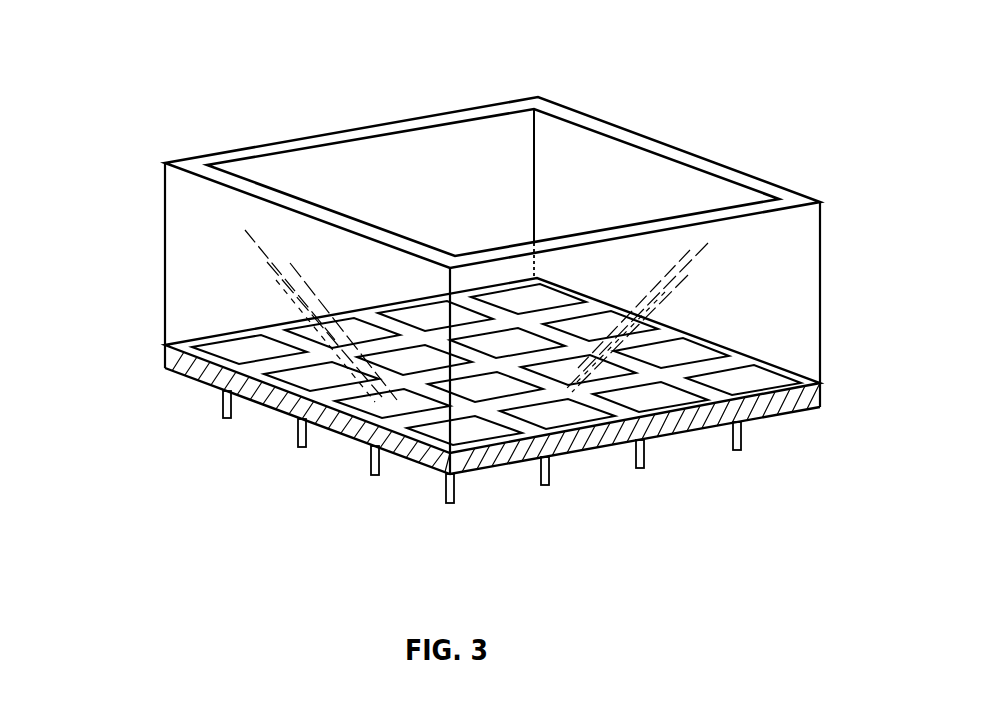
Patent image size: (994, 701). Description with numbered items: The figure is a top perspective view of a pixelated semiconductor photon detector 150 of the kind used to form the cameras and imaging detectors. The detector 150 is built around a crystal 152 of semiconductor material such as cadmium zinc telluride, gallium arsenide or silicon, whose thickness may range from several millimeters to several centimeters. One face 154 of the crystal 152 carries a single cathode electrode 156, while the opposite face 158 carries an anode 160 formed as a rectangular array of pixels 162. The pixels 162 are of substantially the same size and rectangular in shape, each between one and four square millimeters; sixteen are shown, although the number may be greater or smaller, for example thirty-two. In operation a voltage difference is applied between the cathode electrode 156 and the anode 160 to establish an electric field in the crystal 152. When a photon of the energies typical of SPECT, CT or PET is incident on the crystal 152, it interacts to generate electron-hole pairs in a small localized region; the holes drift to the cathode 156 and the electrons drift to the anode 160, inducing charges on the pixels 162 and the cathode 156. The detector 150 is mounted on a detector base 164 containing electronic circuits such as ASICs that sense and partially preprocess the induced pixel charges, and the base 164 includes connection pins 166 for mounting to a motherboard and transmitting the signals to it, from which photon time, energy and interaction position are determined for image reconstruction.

The pixelated semiconductor photon detector 150 is at (122, 46).
The crystal 152 is at (805, 303).
The face 154 is at (195, 168).
The cathode electrode 156 is at (325, 168).
The opposite face 158 is at (253, 370).
The anode 160 is at (214, 320).
The pixels 162 is at (236, 355).
The detector base 164 is at (288, 417).
The connection pins 166 is at (375, 477).